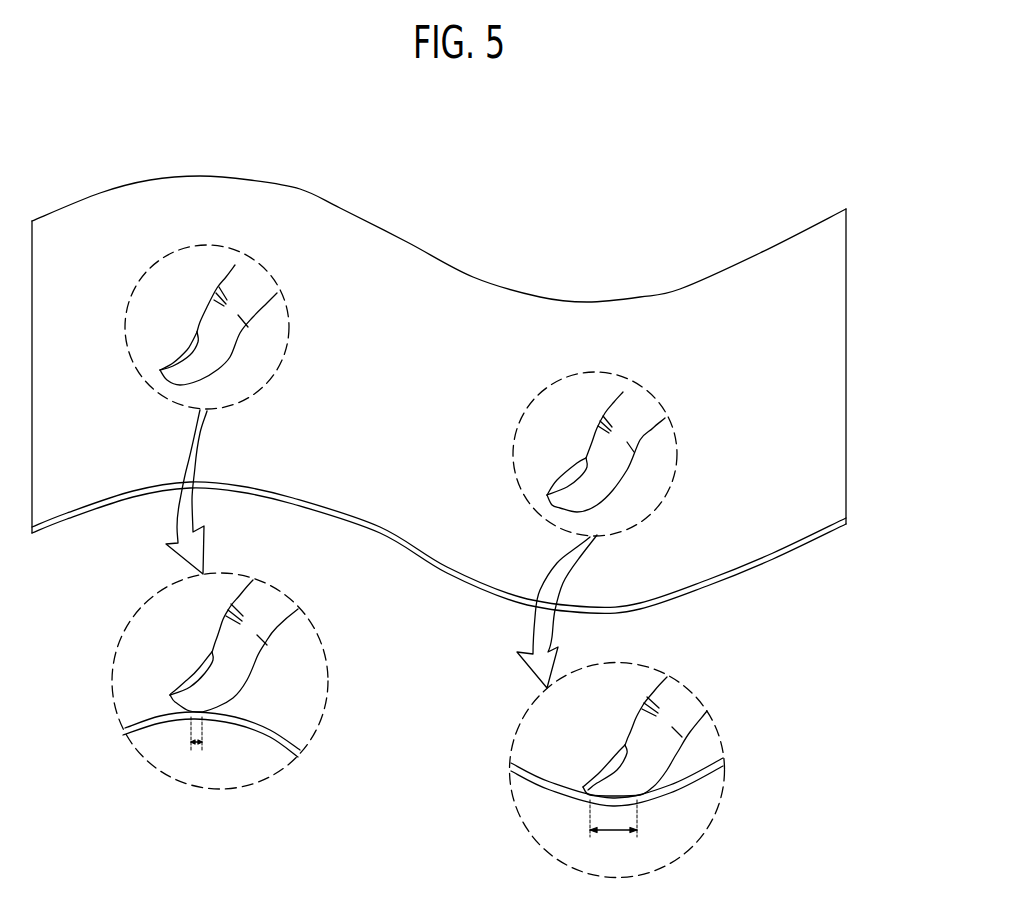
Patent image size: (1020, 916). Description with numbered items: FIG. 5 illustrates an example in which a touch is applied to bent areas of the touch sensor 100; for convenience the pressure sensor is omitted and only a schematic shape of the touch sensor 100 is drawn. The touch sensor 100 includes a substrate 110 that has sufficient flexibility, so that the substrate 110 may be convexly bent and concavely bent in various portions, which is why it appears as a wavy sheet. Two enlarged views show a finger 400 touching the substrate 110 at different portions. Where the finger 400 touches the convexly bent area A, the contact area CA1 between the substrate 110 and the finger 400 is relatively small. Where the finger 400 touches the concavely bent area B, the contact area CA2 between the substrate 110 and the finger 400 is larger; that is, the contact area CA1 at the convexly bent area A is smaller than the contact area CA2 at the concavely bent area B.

The touch sensor 100 is at (848, 170).
The substrate 110 is at (765, 562).
The finger 400 is at (218, 628).
The contact area CA1 is at (196, 744).
The contact area CA2 is at (613, 829).
The convexly bent area A is at (165, 735).
The concavely bent area B is at (554, 817).